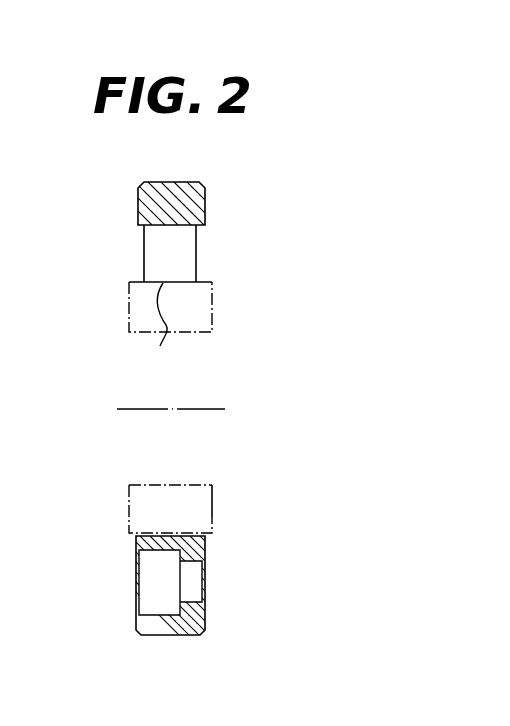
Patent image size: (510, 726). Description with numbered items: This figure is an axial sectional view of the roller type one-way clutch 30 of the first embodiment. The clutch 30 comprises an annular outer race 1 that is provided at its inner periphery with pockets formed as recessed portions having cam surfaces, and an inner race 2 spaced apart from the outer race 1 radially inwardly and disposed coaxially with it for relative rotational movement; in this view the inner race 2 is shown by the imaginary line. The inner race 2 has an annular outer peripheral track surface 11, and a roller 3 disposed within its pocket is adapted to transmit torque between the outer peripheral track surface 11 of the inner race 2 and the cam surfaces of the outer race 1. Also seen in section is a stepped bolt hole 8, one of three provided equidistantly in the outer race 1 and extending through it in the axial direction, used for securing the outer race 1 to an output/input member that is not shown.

The outer race 1 is at (152, 191).
The roller 3 is at (147, 241).
The roller type one-way clutch 30 is at (184, 207).
The inner race 2 is at (203, 312).
The outer peripheral track surface 11 is at (161, 329).
The stepped bolt hole 8 is at (191, 598).